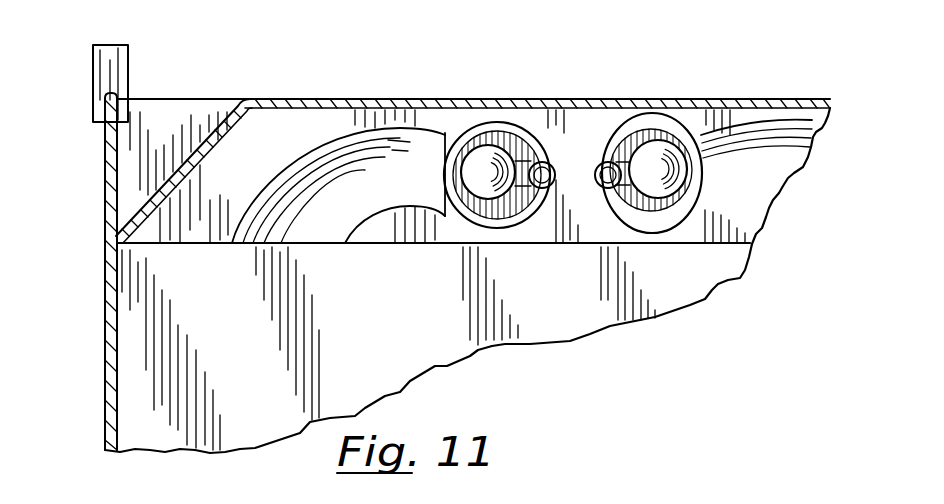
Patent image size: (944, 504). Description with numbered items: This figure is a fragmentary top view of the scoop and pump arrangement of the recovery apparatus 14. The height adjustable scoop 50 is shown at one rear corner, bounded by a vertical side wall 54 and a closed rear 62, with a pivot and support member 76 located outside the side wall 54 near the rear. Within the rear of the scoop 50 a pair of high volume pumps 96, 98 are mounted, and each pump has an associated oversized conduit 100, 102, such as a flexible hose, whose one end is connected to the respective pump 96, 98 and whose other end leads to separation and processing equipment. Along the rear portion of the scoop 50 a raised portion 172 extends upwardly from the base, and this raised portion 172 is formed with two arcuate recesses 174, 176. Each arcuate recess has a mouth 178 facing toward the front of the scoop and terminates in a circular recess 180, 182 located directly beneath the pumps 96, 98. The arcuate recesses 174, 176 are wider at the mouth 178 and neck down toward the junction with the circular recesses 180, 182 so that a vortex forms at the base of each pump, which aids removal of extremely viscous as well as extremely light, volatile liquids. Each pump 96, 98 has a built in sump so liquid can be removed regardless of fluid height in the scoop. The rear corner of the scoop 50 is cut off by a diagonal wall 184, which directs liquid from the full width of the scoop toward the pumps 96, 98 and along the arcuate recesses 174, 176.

The recovery apparatus 14 is at (268, 100).
The height adjustable scoop 50 is at (104, 330).
The vertical side wall 54 is at (103, 130).
The closed rear 62 is at (792, 100).
The pivot and support member 76 is at (128, 62).
The high volume pump 96 is at (668, 158).
The high volume pump 98 is at (482, 157).
The oversized conduit 100 is at (605, 162).
The oversized conduit 102 is at (545, 162).
The raised portion 172 is at (238, 194).
The arcuate recess 174 is at (723, 157).
The arcuate recess 176 is at (375, 158).
The mouth 178 is at (305, 226).
The circular recess 180 is at (658, 118).
The circular recess 182 is at (513, 120).
The diagonal wall 184 is at (205, 136).